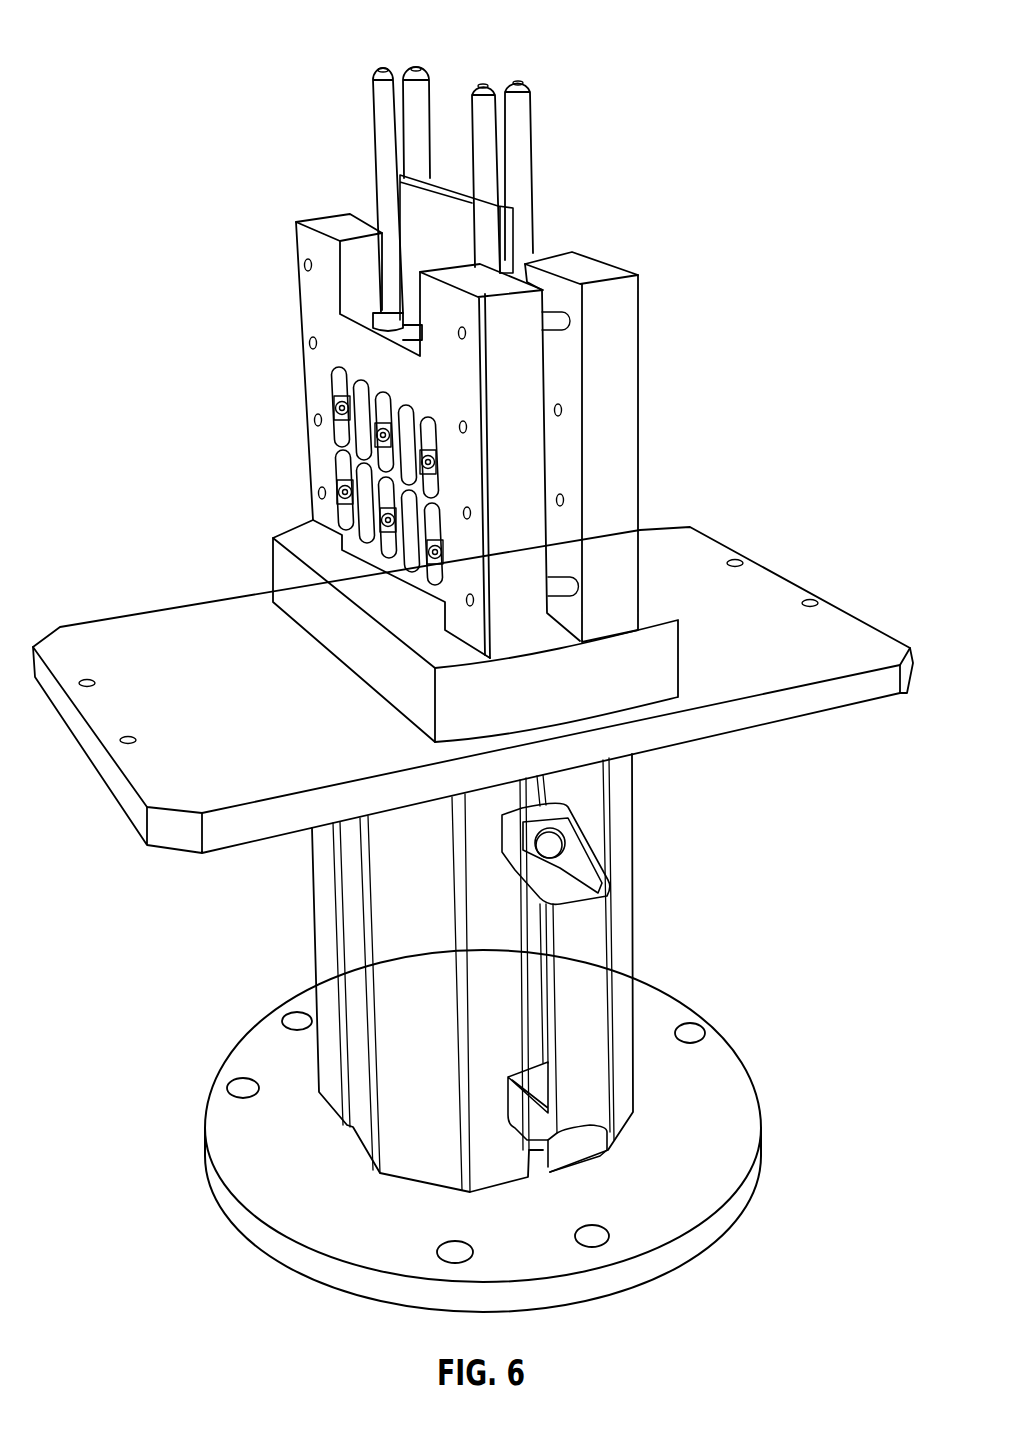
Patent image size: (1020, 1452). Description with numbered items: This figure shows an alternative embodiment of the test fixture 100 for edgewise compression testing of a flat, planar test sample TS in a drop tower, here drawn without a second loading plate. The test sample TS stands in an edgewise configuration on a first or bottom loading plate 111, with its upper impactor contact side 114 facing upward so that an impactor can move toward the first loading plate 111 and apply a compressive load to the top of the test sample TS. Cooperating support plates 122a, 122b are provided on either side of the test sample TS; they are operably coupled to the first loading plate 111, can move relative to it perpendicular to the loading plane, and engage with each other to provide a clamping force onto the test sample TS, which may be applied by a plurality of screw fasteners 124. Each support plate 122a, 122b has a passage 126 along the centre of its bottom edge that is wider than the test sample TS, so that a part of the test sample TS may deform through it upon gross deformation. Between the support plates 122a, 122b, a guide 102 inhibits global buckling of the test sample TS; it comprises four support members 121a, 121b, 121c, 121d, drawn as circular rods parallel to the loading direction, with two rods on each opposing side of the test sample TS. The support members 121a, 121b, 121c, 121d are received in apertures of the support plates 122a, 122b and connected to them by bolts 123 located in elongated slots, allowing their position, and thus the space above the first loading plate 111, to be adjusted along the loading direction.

The test fixture 100 is at (143, 157).
The guide 102 is at (658, 160).
The first loading plate 111 is at (565, 685).
The upper impactor contact side 114 is at (355, 146).
The test sample TS is at (433, 220).
The support member 121a is at (380, 97).
The support member 121b is at (417, 68).
The support member 121c is at (520, 103).
The support member 121d is at (482, 118).
The support plate 122a is at (370, 436).
The support plate 122b is at (617, 333).
The bolts 123 is at (338, 493).
The screw fasteners 124 is at (310, 343).
The passage 126 is at (373, 571).